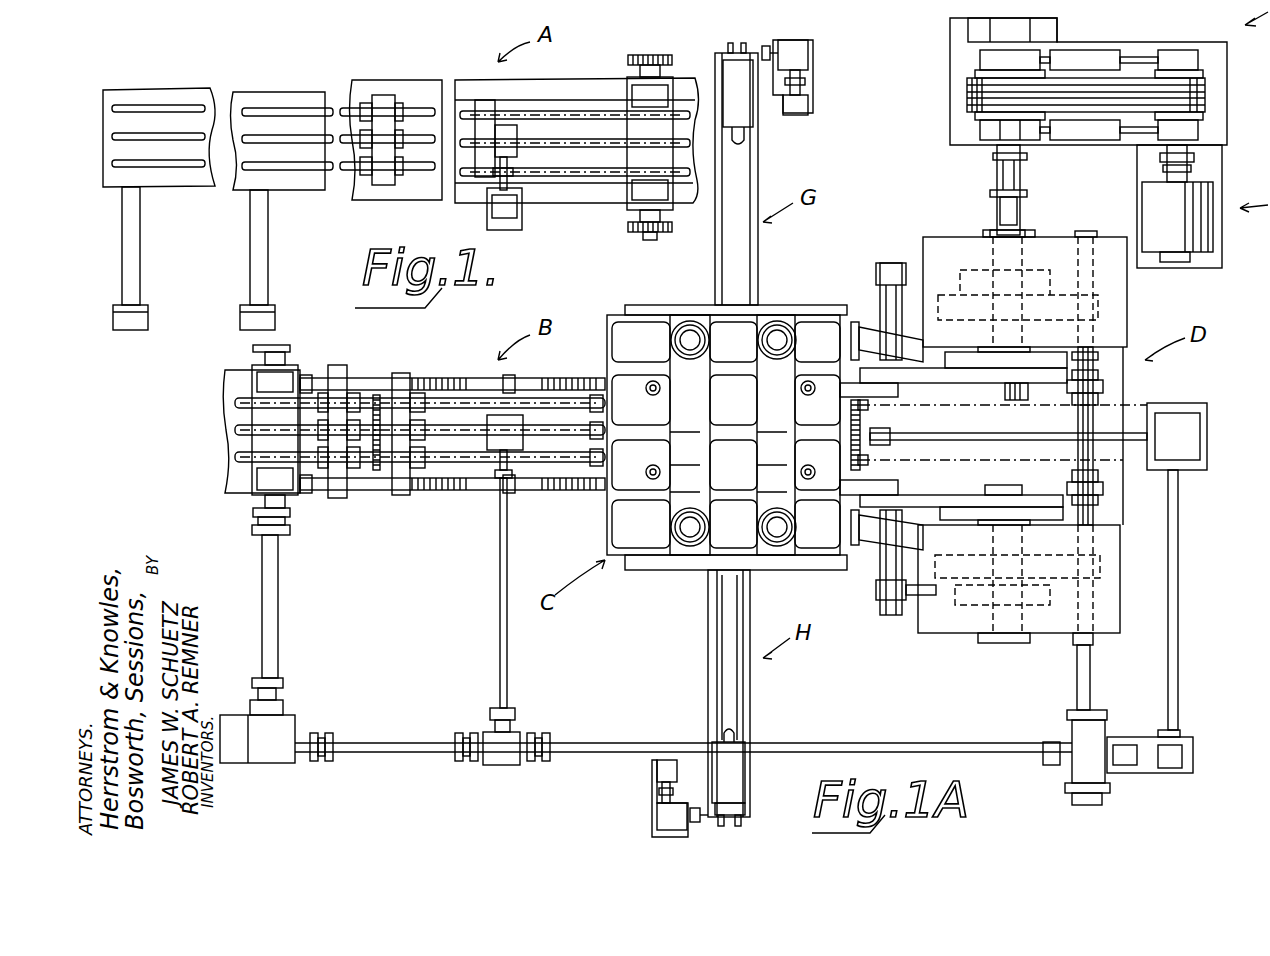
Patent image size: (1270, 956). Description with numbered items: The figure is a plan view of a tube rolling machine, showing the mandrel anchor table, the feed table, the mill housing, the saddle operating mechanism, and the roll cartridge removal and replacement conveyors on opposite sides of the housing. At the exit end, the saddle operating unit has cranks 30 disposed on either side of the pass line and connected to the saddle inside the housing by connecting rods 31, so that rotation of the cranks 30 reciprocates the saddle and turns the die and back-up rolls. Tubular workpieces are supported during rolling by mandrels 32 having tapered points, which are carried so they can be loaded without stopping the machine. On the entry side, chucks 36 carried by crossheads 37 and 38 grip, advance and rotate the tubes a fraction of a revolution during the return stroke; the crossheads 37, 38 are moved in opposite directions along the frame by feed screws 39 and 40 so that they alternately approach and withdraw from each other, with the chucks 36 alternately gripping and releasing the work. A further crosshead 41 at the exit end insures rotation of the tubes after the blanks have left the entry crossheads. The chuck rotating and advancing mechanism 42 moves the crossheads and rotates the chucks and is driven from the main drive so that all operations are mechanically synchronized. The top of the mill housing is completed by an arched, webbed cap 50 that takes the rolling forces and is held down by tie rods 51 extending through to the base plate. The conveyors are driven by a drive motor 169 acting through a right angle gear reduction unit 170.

In FIG. 1A, the cranks 30 is at (1005, 375).
In FIG. 1A, the connecting rods 31 is at (912, 378).
In FIG. 1, the mandrels 32 is at (275, 146).
In FIG. 1A, the mandrels 32 is at (1108, 397).
In FIG. 1A, the chucks 36 is at (420, 402).
In FIG. 1A, the crosshead 37 is at (338, 365).
In FIG. 1A, the crosshead 38 is at (401, 373).
In FIG. 1A, the feed screw 39 is at (522, 382).
In FIG. 1A, the feed screw 40 is at (522, 490).
In FIG. 1A, the crosshead 41 is at (890, 430).
In FIG. 1A, the chuck rotating and advancing mechanism 42 is at (441, 690).
In FIG. 1A, the cap 50 is at (780, 385).
In FIG. 1A, the tie rods 51 is at (690, 336).
In FIG. 1, the drive motor 169 is at (808, 104).
In FIG. 1A, the drive motor 169 is at (657, 768).
In FIG. 1, the right angle gear reduction unit 170 is at (808, 42).
In FIG. 1A, the right angle gear reduction unit 170 is at (657, 815).